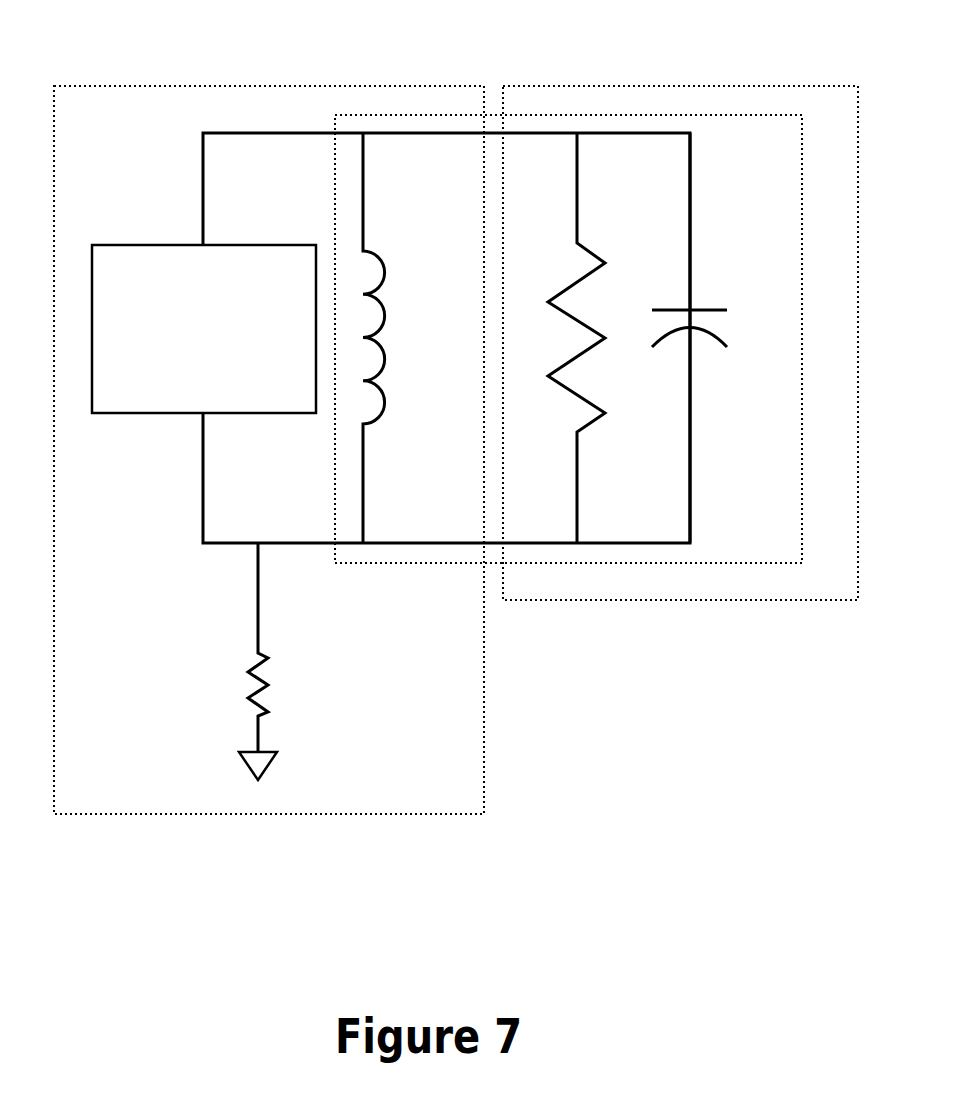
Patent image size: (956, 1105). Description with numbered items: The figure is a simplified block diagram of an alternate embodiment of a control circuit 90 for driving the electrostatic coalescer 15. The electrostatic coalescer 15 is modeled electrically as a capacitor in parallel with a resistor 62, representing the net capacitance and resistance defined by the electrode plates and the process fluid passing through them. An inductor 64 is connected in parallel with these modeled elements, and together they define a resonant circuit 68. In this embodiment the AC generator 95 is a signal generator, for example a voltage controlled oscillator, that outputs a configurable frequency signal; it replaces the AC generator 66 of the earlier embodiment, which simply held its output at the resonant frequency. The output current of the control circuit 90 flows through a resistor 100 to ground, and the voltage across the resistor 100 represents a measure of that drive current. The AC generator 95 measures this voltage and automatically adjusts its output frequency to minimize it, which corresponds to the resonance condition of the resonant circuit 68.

The control circuit 90 is at (241, 86).
The electrostatic coalescer 15 is at (633, 86).
The resonant circuit 68 is at (433, 565).
The AC generator 95 is at (219, 359).
The AC generator 66 is at (377, 252).
The inductor 64 is at (592, 253).
The resistor 62 is at (713, 309).
The resistor 100 is at (250, 698).